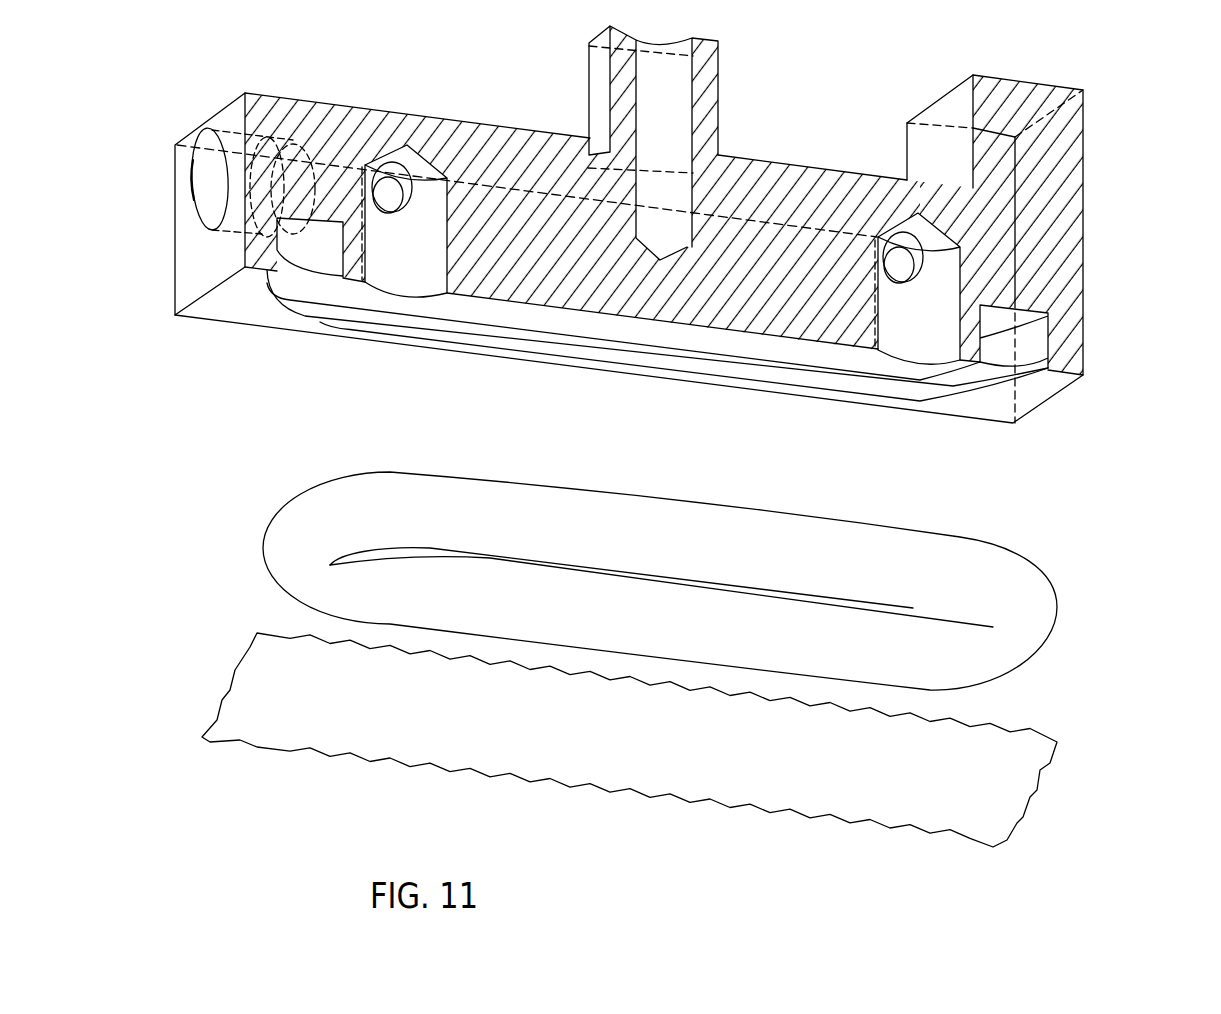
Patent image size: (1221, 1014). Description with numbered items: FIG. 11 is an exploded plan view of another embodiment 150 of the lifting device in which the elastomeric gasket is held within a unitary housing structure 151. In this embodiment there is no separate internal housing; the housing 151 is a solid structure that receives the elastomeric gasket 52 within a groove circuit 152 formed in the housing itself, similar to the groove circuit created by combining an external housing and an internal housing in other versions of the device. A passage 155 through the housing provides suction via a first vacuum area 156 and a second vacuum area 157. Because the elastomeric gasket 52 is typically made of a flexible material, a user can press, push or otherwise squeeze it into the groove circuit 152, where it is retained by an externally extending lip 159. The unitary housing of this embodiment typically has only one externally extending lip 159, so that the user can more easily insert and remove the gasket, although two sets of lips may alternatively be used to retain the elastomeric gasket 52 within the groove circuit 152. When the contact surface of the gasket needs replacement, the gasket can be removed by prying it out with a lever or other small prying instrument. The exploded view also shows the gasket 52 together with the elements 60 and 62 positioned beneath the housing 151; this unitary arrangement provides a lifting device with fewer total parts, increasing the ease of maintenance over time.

The embodiment with unitary housing 150 is at (1104, 146).
The unitary housing structure 151 is at (1084, 203).
The groove circuit 152 is at (318, 295).
The passage 155 is at (204, 190).
The first vacuum area 156 is at (400, 292).
The second vacuum area 157 is at (910, 360).
The externally extending lip 159 is at (988, 382).
The elastomeric gasket 52 is at (264, 548).
The seal ring opening 60 is at (1008, 663).
The serrated strip 62 is at (273, 735).